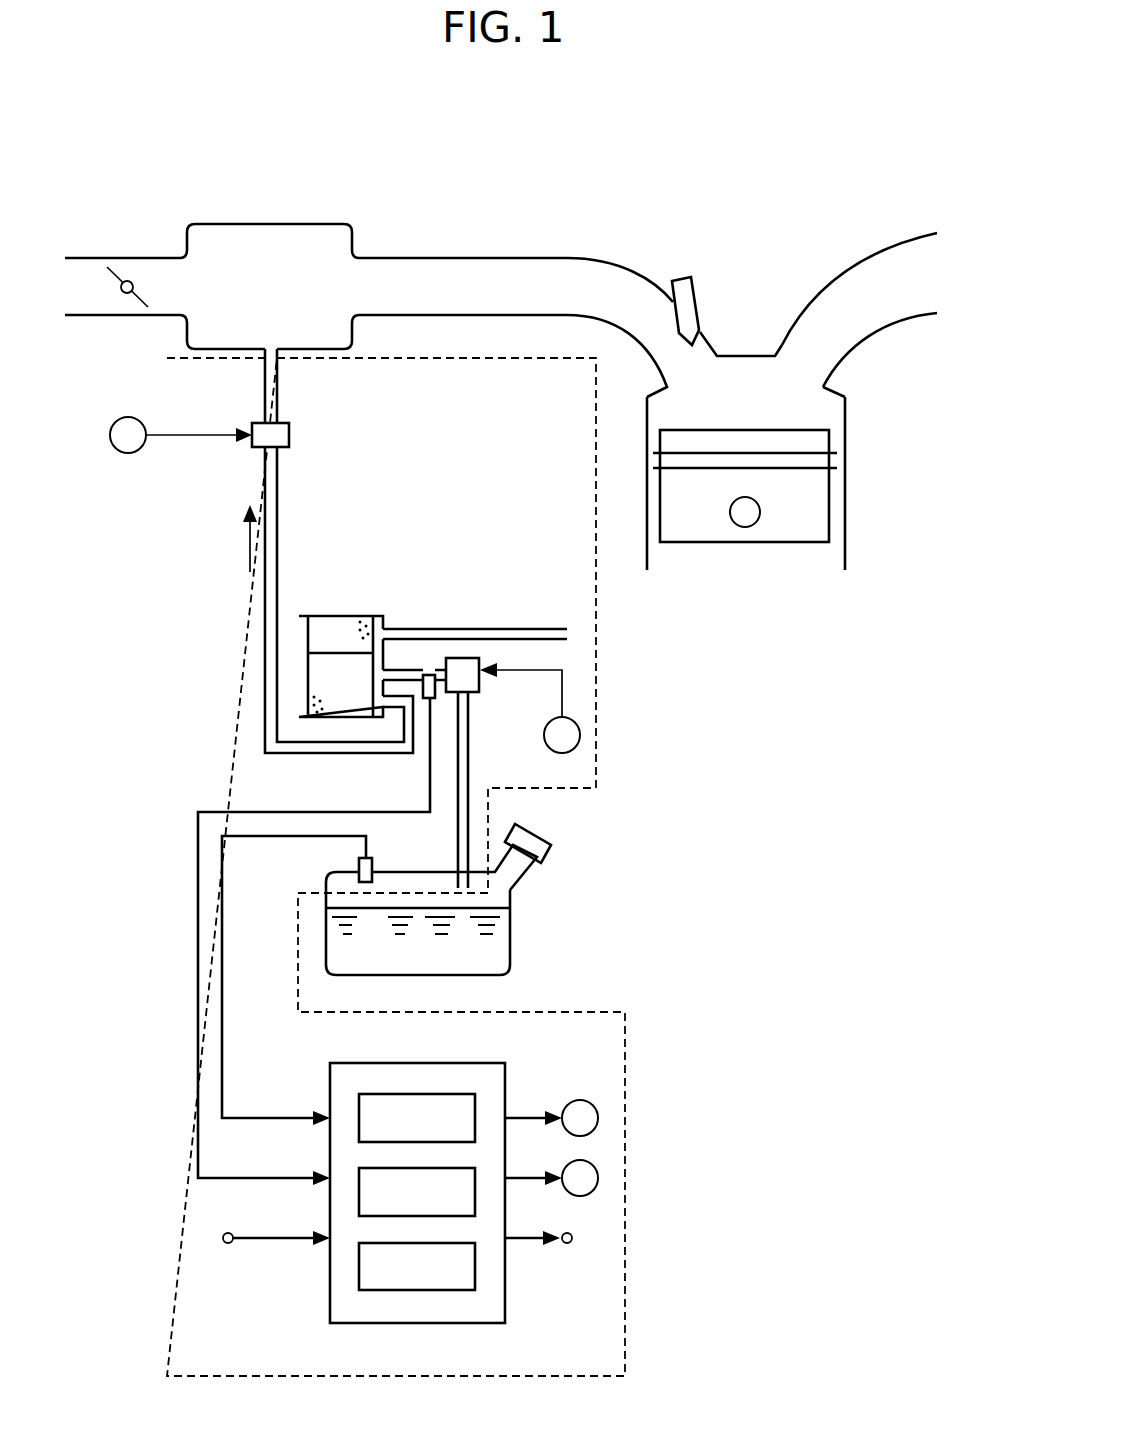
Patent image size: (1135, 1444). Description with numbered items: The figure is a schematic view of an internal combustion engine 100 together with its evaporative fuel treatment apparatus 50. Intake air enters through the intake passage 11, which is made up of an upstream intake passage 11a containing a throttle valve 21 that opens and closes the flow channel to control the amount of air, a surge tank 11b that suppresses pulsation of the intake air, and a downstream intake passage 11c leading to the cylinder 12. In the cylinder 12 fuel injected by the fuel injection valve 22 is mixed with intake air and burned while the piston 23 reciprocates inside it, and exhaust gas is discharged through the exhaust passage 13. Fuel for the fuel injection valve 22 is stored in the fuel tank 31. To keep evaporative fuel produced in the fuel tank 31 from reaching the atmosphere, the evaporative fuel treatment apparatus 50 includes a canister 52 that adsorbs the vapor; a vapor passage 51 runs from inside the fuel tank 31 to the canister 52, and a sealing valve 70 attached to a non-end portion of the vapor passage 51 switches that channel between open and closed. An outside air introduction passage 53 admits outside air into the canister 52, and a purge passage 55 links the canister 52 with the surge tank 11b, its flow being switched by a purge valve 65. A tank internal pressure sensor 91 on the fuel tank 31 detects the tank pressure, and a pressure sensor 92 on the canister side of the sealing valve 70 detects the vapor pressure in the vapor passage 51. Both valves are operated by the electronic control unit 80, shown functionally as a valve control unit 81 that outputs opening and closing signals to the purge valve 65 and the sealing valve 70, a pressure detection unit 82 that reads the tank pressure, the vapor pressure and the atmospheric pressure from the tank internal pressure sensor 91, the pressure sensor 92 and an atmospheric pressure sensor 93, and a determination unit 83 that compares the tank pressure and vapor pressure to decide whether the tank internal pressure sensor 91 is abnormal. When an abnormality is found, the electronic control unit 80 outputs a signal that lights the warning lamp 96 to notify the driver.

The internal combustion engine 100 is at (822, 117).
The intake passage 11 is at (423, 260).
The upstream intake passage 11a is at (126, 241).
The surge tank 11b is at (269, 258).
The downstream intake passage 11c is at (568, 282).
The throttle valve 21 is at (127, 317).
The fuel injection valve 22 is at (698, 286).
The exhaust passage 13 is at (859, 301).
The cylinder 12 is at (778, 483).
The piston 23 is at (781, 487).
The evaporative fuel treatment apparatus 50 is at (360, 867).
The purge passage 55 is at (328, 551).
The purge valve 65 is at (199, 458).
The canister 52 is at (341, 640).
The outside air introduction passage 53 is at (475, 608).
The pressure sensor 92 is at (415, 637).
The sealing valve 70 is at (513, 705).
The vapor passage 51 is at (496, 790).
The tank internal pressure sensor 91 is at (394, 855).
The fuel tank 31 is at (448, 899).
The electronic control unit 80 is at (430, 1173).
The valve control unit 81 is at (417, 1083).
The pressure detection unit 82 is at (459, 1196).
The determination unit 83 is at (459, 1275).
The atmospheric pressure sensor 93 is at (274, 1266).
The warning lamp 96 is at (584, 1266).